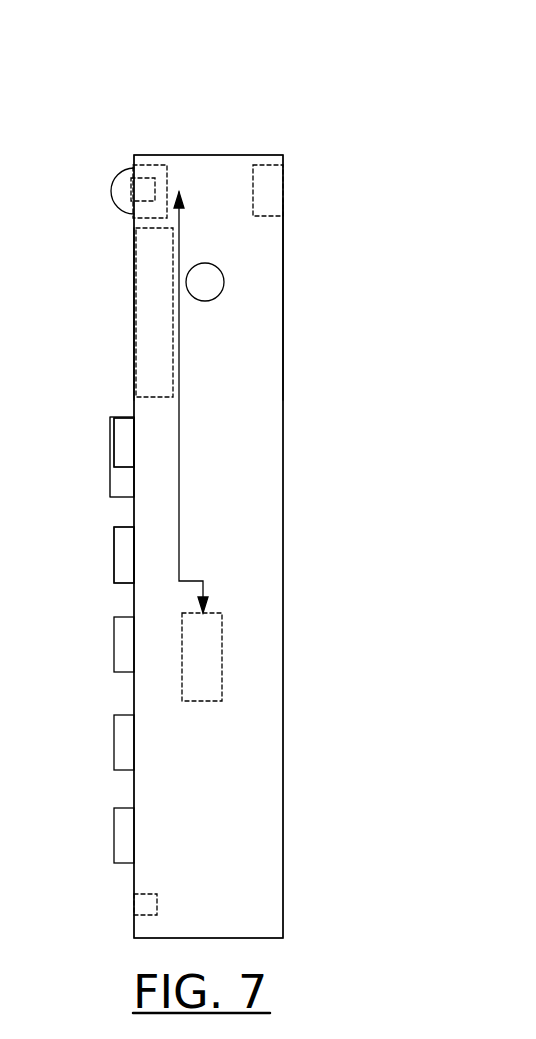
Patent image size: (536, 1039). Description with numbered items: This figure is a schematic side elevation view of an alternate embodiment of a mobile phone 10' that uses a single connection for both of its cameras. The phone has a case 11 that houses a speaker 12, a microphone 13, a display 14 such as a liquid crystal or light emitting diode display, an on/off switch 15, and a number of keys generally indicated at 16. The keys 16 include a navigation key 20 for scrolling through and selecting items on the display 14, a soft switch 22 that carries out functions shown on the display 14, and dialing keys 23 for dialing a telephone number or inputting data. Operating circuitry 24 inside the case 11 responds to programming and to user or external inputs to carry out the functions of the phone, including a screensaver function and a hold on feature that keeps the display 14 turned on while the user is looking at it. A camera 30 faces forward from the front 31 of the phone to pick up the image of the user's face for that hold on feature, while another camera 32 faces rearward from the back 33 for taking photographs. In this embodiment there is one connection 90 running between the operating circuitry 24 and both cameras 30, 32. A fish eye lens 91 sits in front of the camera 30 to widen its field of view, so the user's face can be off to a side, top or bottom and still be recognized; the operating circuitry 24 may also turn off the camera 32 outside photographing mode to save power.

The mobile phone 10' is at (191, 494).
The case 11 is at (217, 155).
The speaker 12 is at (140, 180).
The microphone 13 is at (134, 913).
The display 14 is at (134, 302).
The on/off switch 15 is at (224, 273).
The keys 16 is at (85, 393).
The navigation key 20 is at (112, 420).
The soft switch 22 is at (113, 443).
The dialing keys 23 is at (102, 516).
The operating circuitry 24 is at (222, 652).
The camera 30 is at (131, 170).
The front 31 is at (134, 220).
The camera 32 is at (283, 183).
The back 33 is at (283, 270).
The connection 90 is at (180, 250).
The fish eye lens 91 is at (118, 184).